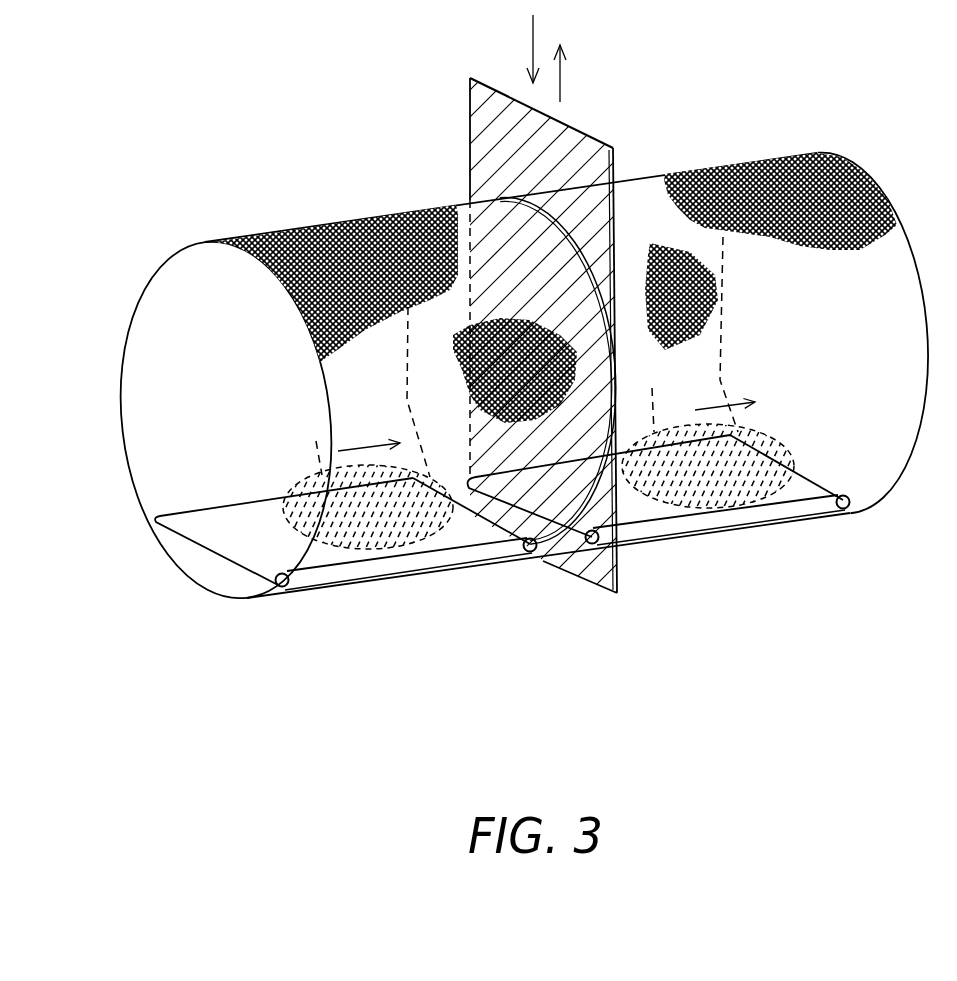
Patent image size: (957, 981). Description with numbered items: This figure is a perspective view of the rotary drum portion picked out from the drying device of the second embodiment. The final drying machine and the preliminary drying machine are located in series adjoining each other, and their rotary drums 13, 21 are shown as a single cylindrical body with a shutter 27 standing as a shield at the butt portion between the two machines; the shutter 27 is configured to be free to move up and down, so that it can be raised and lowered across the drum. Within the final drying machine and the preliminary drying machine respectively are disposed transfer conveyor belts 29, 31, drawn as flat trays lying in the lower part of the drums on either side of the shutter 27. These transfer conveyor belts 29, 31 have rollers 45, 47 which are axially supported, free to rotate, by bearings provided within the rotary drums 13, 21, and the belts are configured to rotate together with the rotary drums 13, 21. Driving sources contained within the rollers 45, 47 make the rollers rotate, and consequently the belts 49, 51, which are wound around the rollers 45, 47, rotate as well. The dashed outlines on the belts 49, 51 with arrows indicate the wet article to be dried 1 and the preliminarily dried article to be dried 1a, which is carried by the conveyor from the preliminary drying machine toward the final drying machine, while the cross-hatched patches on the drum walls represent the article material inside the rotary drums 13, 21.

The rotary drum 13 is at (757, 156).
The rotary drum 21 is at (321, 232).
The shutter 27 is at (586, 143).
The transfer conveyor belt 29 is at (695, 544).
The transfer conveyor belt 31 is at (365, 588).
The roller 45 is at (843, 510).
The roller 47 is at (282, 588).
The belt 49 is at (754, 502).
The belt 51 is at (448, 548).
The article to be dried 1 is at (707, 376).
The preliminarily dried article to be dried 1a is at (367, 432).